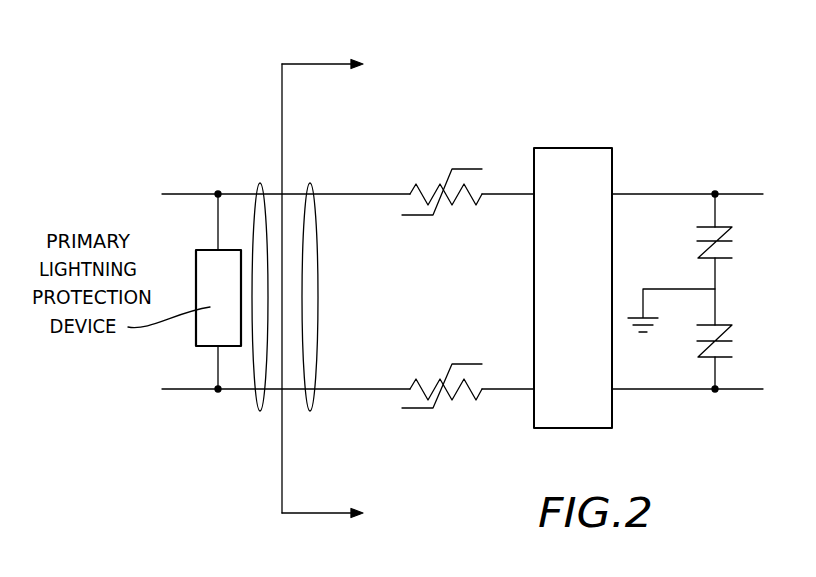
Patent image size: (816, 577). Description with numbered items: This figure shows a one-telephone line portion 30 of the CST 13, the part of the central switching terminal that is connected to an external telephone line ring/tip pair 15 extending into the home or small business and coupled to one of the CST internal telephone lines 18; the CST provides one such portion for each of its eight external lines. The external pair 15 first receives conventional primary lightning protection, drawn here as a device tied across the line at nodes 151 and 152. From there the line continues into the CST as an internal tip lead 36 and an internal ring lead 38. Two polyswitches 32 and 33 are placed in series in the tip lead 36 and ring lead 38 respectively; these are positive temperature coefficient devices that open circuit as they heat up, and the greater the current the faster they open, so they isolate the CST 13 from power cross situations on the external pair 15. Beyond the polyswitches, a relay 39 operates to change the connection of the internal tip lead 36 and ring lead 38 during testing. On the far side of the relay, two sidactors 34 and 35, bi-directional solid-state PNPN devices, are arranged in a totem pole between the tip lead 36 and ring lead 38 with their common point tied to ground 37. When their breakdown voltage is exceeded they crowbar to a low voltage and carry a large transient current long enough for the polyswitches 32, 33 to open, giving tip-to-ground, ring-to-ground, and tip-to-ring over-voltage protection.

The CST 13 is at (347, 299).
The external telephone line ring/tip pair 15 is at (252, 184).
The internal telephone line 18 is at (312, 411).
The one-telephone line portion 30 is at (600, 260).
The polyswitch 32 is at (458, 204).
The polyswitch 33 is at (423, 392).
The sidactor 34 is at (701, 225).
The sidactor 35 is at (700, 325).
The tip lead 36 is at (369, 194).
The ground 37 is at (676, 288).
The ring lead 38 is at (332, 391).
The relay 39 is at (585, 333).
The tip side connection node of primary lightning protection device 151 is at (217, 193).
The ring side connection node of primary lightning protection device 152 is at (191, 390).